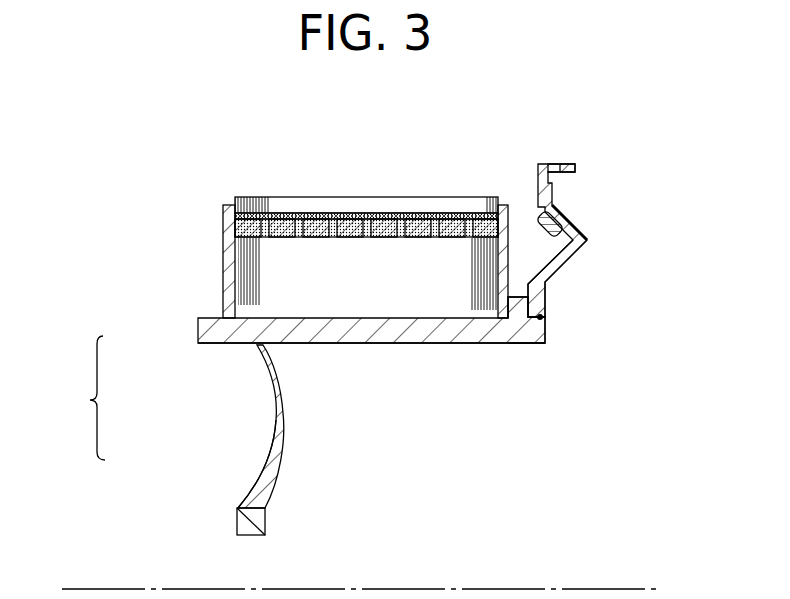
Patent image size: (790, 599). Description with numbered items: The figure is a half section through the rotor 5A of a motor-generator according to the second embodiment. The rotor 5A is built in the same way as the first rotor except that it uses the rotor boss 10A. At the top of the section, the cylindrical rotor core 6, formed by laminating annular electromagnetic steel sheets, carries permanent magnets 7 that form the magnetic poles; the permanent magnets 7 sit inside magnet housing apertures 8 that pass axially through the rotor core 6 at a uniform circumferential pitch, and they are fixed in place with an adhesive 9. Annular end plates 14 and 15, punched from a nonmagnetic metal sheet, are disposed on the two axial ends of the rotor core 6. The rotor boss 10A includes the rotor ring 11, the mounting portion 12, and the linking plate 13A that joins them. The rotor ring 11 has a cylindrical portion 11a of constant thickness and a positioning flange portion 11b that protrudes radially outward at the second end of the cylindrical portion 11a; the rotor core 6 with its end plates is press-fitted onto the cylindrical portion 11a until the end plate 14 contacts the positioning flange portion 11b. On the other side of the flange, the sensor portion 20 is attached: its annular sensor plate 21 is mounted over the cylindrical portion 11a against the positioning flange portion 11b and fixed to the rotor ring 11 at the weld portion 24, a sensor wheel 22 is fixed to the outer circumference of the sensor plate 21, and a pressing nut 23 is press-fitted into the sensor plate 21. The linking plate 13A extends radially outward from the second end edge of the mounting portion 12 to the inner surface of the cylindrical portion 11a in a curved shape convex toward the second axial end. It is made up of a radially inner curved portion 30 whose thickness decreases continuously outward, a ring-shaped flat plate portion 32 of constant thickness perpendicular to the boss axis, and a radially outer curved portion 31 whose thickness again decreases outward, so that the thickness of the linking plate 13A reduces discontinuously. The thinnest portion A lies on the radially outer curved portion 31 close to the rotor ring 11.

The rotor 5A is at (157, 130).
The rotor core 6 is at (272, 205).
The permanent magnets 7 is at (313, 219).
The magnet housing apertures 8 is at (363, 219).
The adhesive 9 is at (402, 222).
The rotor boss 10A is at (188, 435).
The rotor ring 11 is at (197, 335).
The cylindrical portion 11a is at (412, 338).
The positioning flange portion 11b is at (520, 305).
The mounting portion 12 is at (243, 523).
The linking plate 13A is at (262, 413).
The end plate 14 is at (503, 230).
The end plate 15 is at (228, 271).
The sensor portion 20 is at (612, 242).
The sensor plate 21 is at (560, 265).
The sensor wheel 22 is at (574, 163).
The pressing nut 23 is at (567, 216).
The weld portion 24 is at (546, 319).
The radially inner curved portion 30 is at (290, 455).
The radially outer curved portion 31 is at (290, 350).
The ring-shaped flat plate portion 32 is at (290, 396).
The thinnest portion A is at (260, 347).